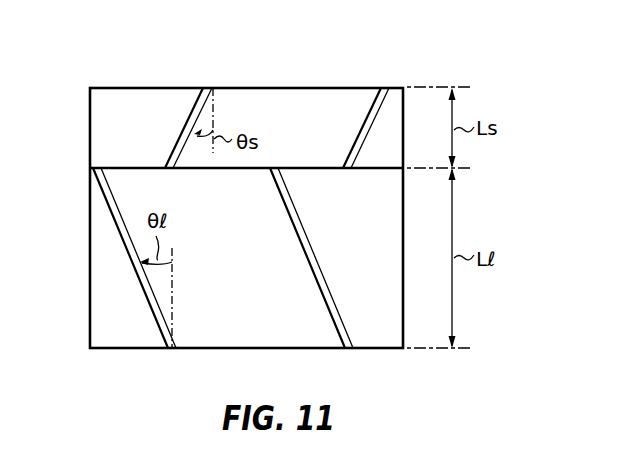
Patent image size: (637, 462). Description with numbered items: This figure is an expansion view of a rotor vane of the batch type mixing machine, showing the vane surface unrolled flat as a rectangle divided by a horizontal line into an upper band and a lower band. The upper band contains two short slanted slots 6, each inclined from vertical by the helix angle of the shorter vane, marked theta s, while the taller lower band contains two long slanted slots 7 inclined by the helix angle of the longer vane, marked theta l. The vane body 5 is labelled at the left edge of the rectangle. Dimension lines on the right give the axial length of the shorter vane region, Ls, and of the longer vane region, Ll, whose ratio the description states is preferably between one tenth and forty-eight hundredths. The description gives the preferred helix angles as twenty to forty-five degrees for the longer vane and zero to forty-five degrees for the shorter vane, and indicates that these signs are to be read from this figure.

The shorter vane 5 is at (90, 258).
The short slit 6 is at (193, 118).
The long slit 7 is at (142, 302).